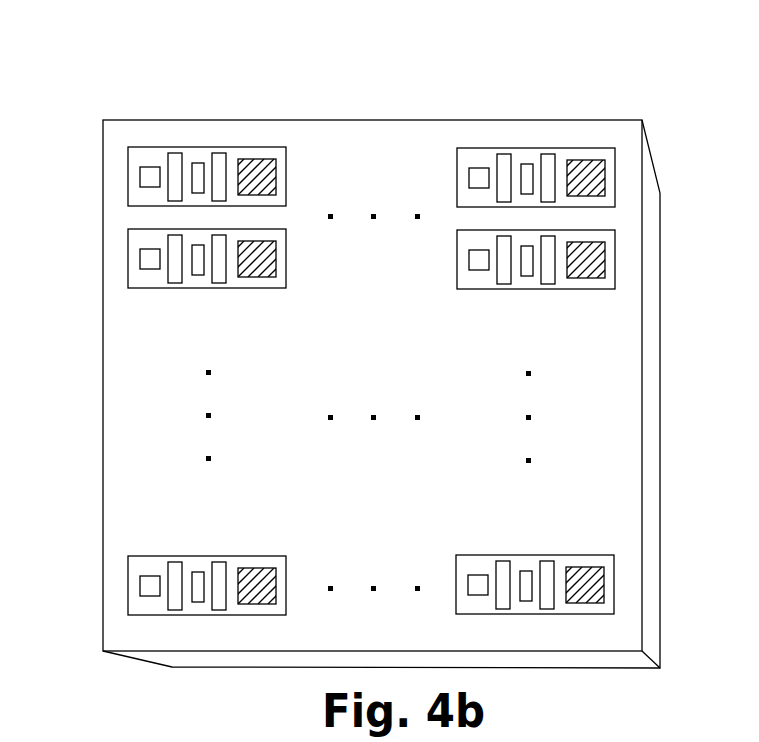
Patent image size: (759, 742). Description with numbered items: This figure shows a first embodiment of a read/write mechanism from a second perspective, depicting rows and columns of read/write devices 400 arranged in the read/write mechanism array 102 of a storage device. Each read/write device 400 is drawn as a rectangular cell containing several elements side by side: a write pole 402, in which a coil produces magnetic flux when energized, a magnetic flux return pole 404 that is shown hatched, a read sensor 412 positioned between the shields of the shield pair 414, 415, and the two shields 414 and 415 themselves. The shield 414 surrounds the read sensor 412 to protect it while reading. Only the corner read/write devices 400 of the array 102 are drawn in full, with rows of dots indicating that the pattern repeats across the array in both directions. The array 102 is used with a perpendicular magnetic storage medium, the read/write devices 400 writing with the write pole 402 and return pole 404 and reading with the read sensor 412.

The read/write mechanism array 102 is at (103, 613).
The read/write device 400 is at (129, 177).
The write pole 402 is at (152, 173).
The magnetic flux return pole 404 is at (260, 167).
The read sensor 412 is at (198, 173).
The shield 414 is at (219, 175).
The shield 415 is at (177, 173).